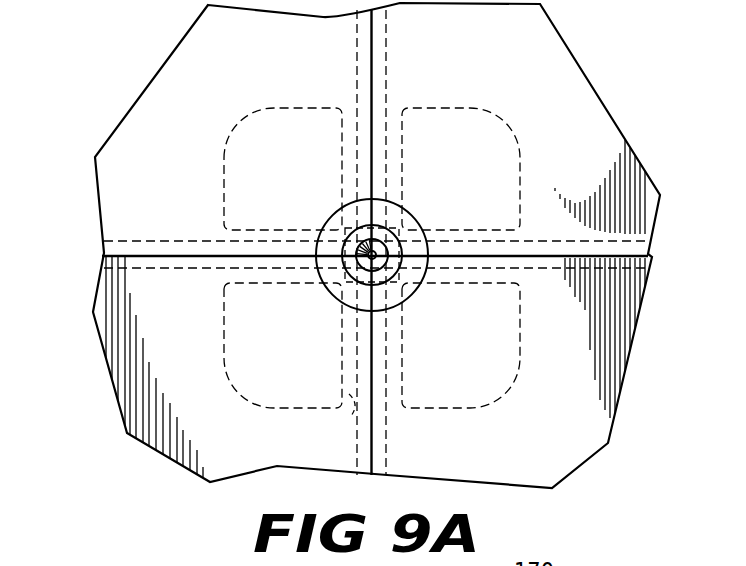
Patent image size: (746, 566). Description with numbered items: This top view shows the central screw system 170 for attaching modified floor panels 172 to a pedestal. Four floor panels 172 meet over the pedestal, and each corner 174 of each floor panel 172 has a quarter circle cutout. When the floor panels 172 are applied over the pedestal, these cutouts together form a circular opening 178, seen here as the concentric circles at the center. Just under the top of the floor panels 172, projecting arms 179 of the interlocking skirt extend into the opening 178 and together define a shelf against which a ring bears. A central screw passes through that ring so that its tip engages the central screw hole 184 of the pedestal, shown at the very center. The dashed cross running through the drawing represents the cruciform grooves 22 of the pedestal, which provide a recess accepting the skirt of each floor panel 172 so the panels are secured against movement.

The central screw system 170 is at (130, 104).
The floor panel 172 is at (262, 77).
The corner 174 is at (335, 316).
The circular opening 178 is at (419, 225).
The projecting arms 179 is at (416, 291).
The central screw hole 184 is at (376, 251).
The cruciform grooves 22 is at (352, 410).